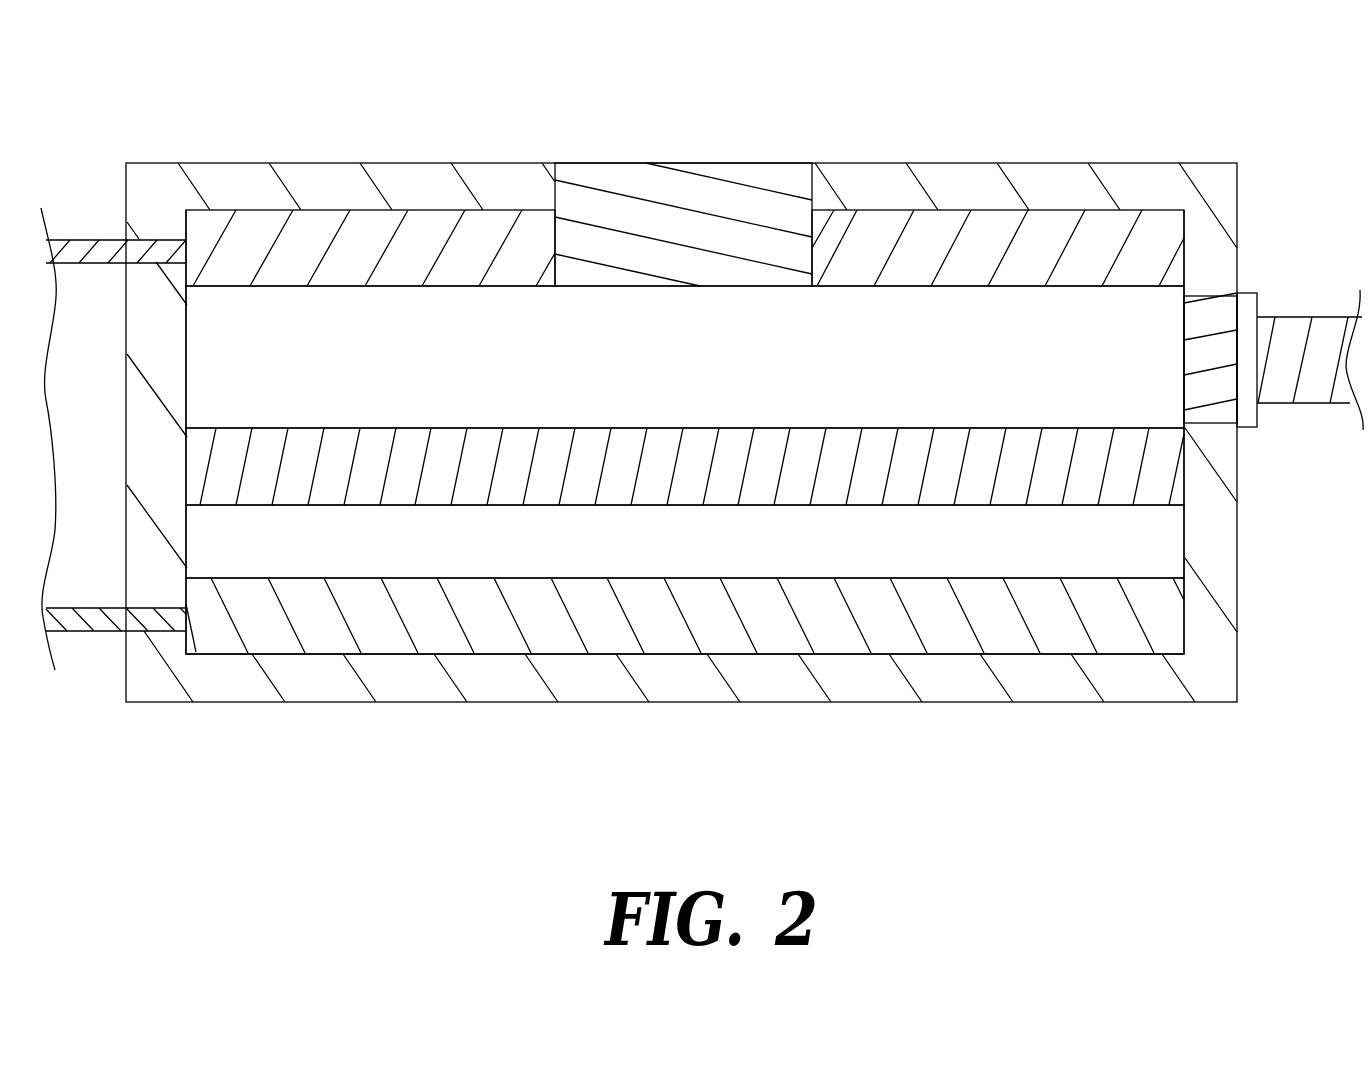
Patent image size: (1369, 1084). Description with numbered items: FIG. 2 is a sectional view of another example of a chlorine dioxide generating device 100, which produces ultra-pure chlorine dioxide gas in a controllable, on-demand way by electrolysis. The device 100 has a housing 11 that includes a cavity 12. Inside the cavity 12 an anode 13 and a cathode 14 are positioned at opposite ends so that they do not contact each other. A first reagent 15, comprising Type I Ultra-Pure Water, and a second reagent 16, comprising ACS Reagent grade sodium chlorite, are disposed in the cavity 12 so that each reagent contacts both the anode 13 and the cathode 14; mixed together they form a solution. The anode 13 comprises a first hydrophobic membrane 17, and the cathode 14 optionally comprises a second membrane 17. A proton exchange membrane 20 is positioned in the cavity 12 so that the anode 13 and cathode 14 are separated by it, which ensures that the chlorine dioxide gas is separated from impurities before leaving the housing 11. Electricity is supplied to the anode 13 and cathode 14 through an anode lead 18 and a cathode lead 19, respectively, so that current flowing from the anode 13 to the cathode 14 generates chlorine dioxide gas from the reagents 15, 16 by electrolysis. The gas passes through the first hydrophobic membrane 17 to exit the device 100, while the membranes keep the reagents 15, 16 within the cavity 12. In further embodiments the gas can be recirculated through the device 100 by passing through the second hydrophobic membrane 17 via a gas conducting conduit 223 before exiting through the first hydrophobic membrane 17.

The chlorine dioxide generating device 100 is at (132, 118).
The housing 11 is at (1183, 190).
The cavity 12 is at (350, 353).
The anode 13 is at (943, 262).
The cathode 14 is at (1005, 605).
The first reagent 15 is at (548, 352).
The second reagent 16 is at (662, 352).
The hydrophobic membrane 17 is at (703, 188).
The anode lead 18 is at (85, 247).
The cathode lead 19 is at (83, 612).
The proton exchange membrane 20 is at (770, 455).
The gas conducting conduit 223 is at (1285, 342).